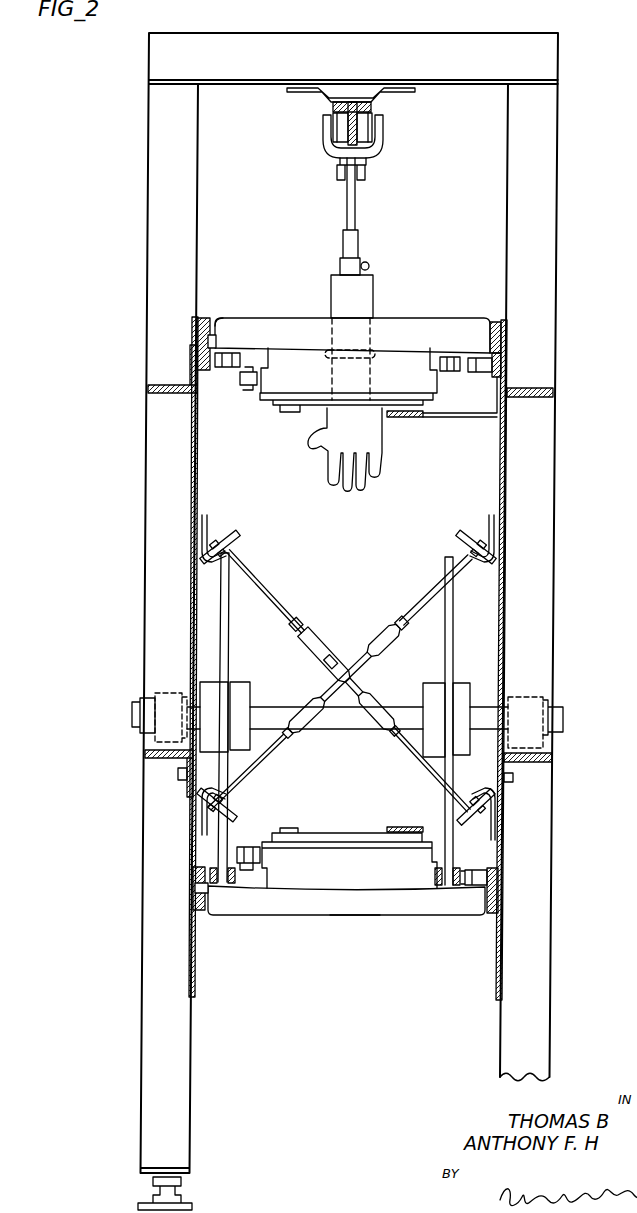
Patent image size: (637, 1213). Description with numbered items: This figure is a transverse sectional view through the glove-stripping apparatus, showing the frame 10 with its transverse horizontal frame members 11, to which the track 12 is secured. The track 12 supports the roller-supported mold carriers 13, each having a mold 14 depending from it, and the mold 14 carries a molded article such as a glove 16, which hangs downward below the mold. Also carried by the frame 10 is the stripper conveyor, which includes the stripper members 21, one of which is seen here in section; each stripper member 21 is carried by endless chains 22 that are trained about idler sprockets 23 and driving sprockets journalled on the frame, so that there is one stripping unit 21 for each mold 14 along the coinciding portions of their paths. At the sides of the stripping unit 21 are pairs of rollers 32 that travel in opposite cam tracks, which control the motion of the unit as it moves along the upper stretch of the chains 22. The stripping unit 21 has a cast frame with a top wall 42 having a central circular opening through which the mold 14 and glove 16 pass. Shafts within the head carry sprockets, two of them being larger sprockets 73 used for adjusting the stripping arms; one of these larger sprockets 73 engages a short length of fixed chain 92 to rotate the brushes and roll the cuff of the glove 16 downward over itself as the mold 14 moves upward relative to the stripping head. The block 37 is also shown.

The frame 10 is at (158, 973).
The transverse horizontal frame members 11 is at (548, 761).
The track 12 is at (334, 107).
The roller-supported mold carrier 13 is at (356, 216).
The mold 14 is at (360, 294).
The glove 16 is at (326, 424).
The stripper member 21 is at (409, 318).
The endless chain 22 is at (452, 372).
The idler sprocket 23 is at (229, 645).
The roller 32 is at (197, 343).
The spacer block 37 is at (503, 327).
The top wall 42 is at (262, 318).
The larger sprocket 73 is at (392, 425).
The fixed chain 92 is at (464, 419).